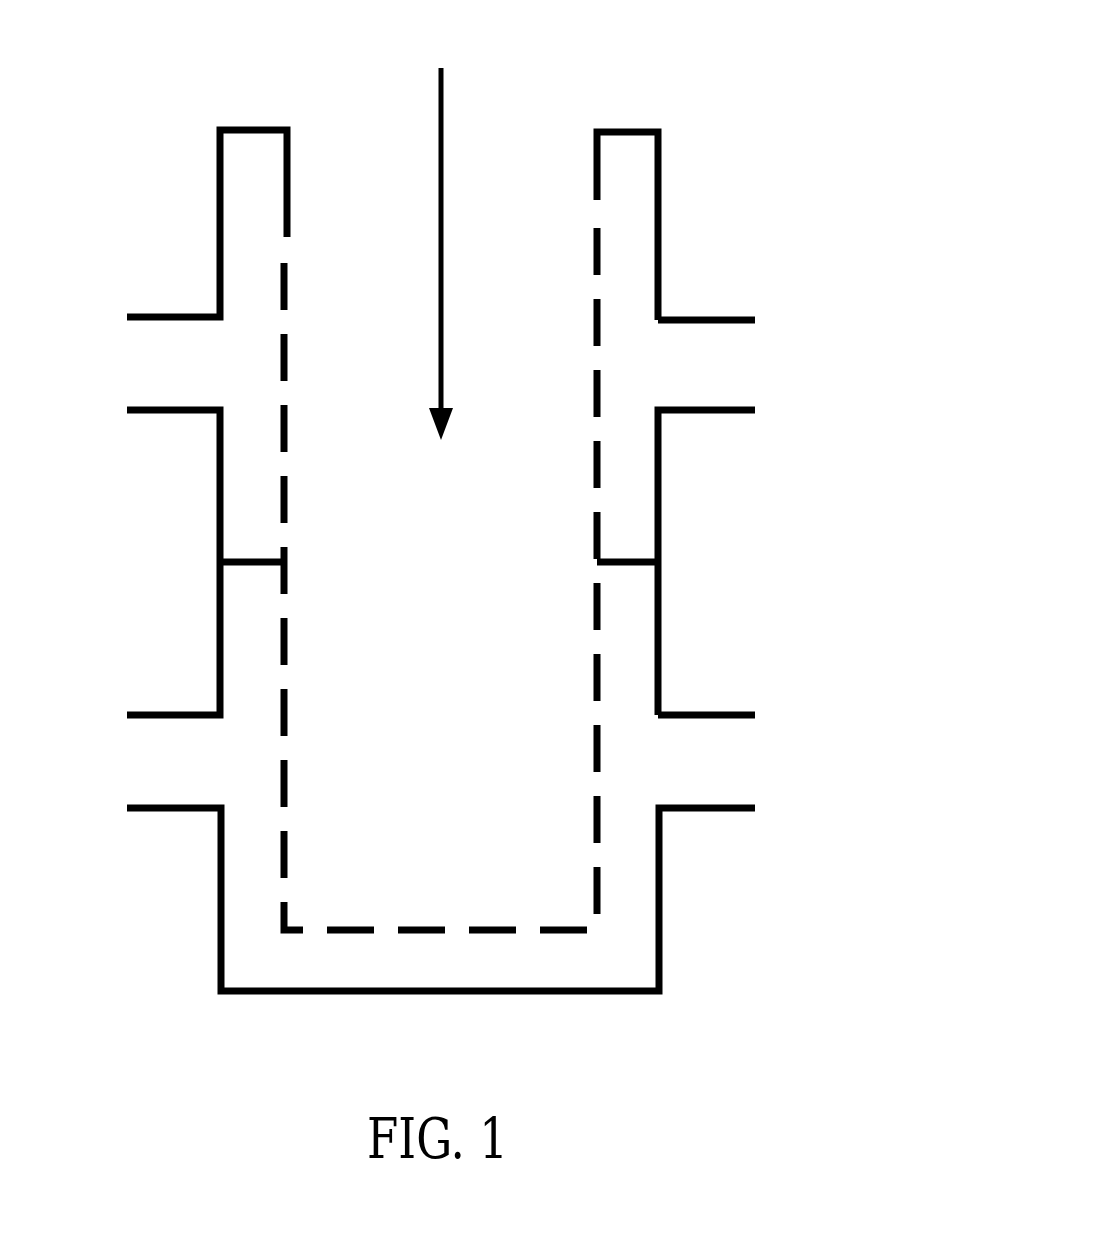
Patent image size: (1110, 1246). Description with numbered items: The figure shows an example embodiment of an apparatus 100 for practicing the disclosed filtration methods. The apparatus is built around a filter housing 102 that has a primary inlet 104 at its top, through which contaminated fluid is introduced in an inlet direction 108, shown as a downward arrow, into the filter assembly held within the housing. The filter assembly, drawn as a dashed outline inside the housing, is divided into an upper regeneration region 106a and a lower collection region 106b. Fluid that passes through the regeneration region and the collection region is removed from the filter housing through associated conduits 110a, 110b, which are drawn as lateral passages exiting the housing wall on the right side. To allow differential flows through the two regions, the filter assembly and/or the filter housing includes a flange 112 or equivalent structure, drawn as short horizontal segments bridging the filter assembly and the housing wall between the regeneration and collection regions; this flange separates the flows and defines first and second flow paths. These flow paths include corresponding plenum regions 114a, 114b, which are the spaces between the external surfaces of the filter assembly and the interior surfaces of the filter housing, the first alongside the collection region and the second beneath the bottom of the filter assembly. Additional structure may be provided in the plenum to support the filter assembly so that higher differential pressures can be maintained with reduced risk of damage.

The apparatus 100 is at (784, 36).
The filter housing 102 is at (707, 226).
The primary inlet 104 is at (488, 502).
The regeneration region 106a is at (167, 223).
The collection region 106b is at (165, 569).
The inlet direction 108 is at (338, 253).
The conduit 110a is at (763, 296).
The conduit 110b is at (773, 698).
The flange 112 is at (518, 522).
The plenum region 114a is at (743, 562).
The plenum region 114b is at (482, 899).